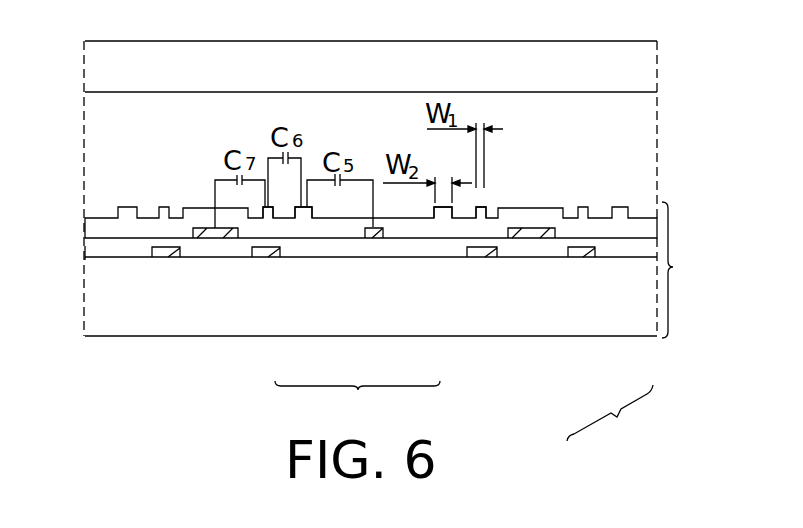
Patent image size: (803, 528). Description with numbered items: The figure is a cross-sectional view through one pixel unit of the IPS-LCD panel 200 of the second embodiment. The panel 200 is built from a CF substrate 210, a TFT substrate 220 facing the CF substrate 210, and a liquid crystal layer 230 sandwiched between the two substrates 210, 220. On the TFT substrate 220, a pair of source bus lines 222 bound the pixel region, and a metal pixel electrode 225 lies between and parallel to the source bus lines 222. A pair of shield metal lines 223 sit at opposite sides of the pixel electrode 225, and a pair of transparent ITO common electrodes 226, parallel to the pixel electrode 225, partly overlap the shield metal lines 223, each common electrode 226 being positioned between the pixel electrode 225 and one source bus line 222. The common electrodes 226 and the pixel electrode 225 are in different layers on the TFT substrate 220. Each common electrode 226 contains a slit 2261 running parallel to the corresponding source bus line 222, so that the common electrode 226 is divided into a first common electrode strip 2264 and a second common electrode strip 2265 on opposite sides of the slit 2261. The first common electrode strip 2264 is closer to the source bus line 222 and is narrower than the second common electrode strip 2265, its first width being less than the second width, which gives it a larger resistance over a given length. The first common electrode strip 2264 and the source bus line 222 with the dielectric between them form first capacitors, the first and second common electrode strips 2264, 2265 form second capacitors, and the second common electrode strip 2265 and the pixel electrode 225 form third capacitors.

The IPS-LCD panel 200 is at (358, 23).
The CF substrate 210 is at (627, 63).
The liquid crystal layer 230 is at (628, 137).
The TFT substrate 220 is at (407, 270).
The slit 2261 is at (600, 212).
The source bus line 222 is at (212, 236).
The shield metal line 223 is at (265, 257).
The pixel electrode 225 is at (372, 238).
The common electrode 226 is at (476, 416).
The first common electrode strip 2264 is at (268, 218).
The second common electrode strip 2265 is at (303, 218).